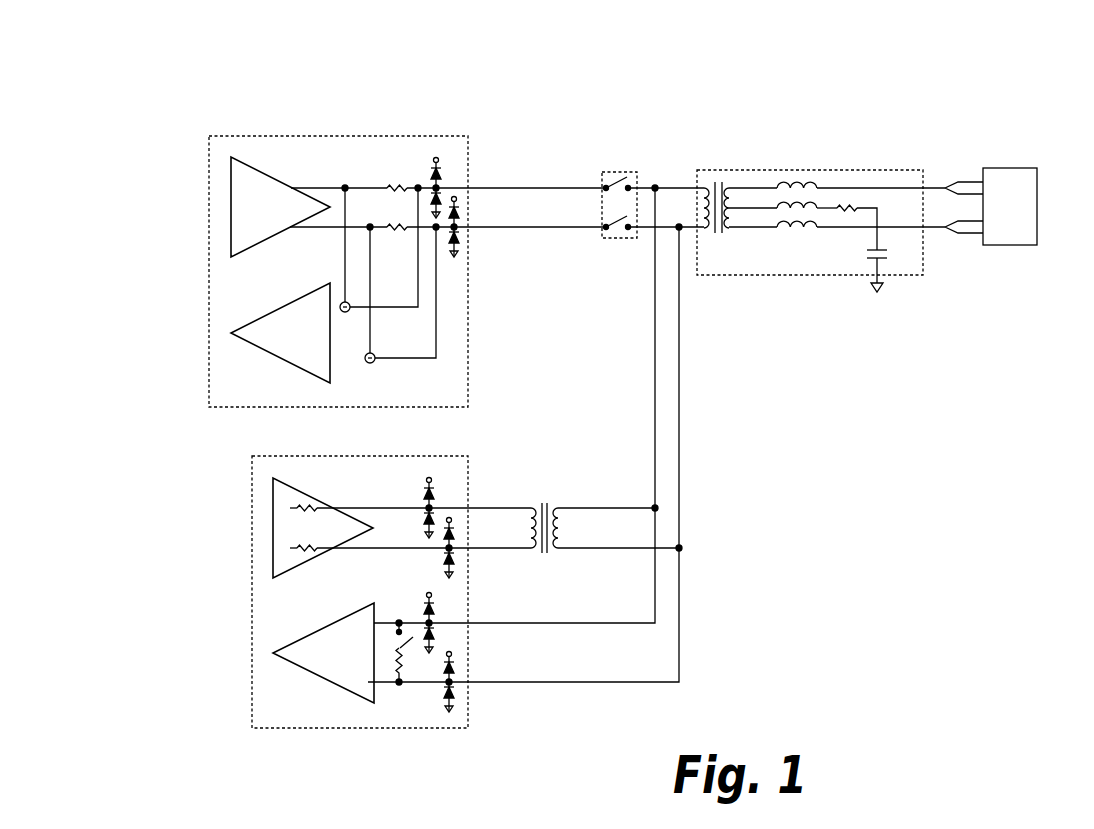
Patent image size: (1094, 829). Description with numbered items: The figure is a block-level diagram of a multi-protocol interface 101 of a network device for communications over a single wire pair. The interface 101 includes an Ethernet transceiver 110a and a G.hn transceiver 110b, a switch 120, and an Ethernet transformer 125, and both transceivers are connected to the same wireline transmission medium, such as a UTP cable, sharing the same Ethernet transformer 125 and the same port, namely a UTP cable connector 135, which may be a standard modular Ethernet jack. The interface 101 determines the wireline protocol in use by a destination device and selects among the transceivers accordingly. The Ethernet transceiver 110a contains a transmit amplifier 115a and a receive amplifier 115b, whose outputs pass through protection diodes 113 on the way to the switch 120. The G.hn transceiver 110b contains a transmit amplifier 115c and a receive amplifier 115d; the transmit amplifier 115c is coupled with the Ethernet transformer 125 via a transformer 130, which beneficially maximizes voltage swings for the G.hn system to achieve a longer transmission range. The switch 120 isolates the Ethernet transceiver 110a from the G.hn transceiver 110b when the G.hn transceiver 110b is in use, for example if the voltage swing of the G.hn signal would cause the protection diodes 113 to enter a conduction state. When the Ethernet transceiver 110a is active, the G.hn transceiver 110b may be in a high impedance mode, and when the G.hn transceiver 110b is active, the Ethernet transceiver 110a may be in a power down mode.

The multi-protocol interface 101 is at (136, 62).
The Ethernet transceiver 110a is at (208, 163).
The G.hn transceiver 110b is at (251, 473).
The protection diodes 113 is at (441, 174).
The transmit amplifier 115a is at (280, 207).
The receive amplifier 115b is at (303, 333).
The transmit amplifier 115c is at (323, 528).
The receive amplifier 115d is at (323, 653).
The switch 120 is at (624, 172).
The Ethernet transformer 125 is at (833, 170).
The transformer 130 is at (548, 506).
The UTP cable connector 135 is at (1003, 168).